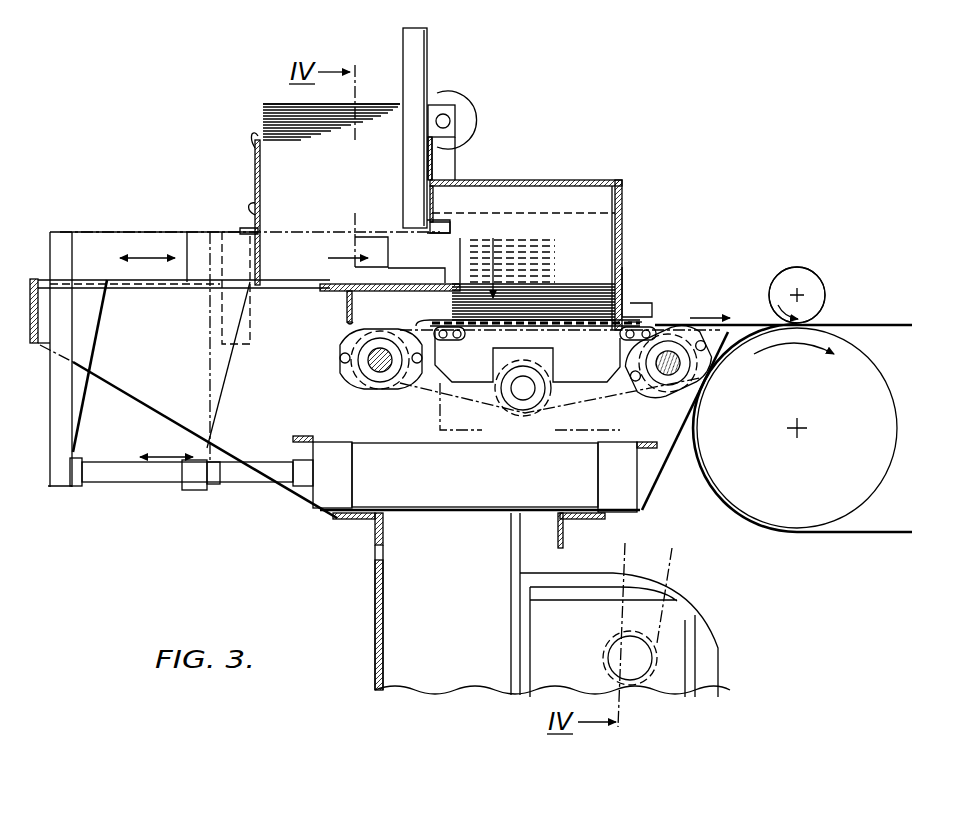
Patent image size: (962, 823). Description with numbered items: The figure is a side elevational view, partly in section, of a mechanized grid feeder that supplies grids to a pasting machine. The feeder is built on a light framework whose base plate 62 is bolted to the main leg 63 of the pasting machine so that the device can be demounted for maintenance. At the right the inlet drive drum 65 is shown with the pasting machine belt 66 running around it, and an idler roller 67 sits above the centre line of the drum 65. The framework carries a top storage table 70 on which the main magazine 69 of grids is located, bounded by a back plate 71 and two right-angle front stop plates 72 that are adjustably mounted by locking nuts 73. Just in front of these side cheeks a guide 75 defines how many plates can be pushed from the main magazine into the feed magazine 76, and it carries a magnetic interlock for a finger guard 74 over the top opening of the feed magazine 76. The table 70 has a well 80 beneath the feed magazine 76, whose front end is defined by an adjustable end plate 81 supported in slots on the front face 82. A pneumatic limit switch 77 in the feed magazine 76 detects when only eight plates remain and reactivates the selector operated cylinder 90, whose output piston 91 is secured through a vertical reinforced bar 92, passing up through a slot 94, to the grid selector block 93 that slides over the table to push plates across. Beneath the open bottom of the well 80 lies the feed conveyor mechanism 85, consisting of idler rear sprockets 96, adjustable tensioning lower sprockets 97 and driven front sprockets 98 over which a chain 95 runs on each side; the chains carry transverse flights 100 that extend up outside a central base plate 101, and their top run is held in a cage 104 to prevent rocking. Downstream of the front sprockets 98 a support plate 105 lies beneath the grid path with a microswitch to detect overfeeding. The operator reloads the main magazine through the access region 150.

The access region 150 is at (247, 108).
The main magazine 69 is at (284, 103).
The front stop plates 72 is at (417, 76).
The locking nuts 73 is at (470, 120).
The guide 75 is at (430, 196).
The finger guard 74 is at (521, 182).
The feed magazine 76 is at (622, 228).
The front face 82 is at (620, 250).
The pneumatic limit switch 77 is at (623, 296).
The adjustable end plate 81 is at (640, 304).
The back plate 71 is at (255, 180).
The grid selector block 93 is at (100, 230).
The slot 94 is at (168, 291).
The vertical reinforced bar 92 is at (84, 396).
The output piston 91 is at (272, 466).
The selector operated cylinder 90 is at (465, 510).
The base plate 62 is at (373, 532).
The main leg 63 is at (375, 596).
The lower sprockets 97 is at (525, 410).
The cage 104 is at (473, 385).
The feed conveyor mechanism 85 is at (435, 380).
The rear sprockets 96 is at (378, 364).
The front sprockets 98 is at (667, 370).
The well 80 is at (443, 300).
The chain 95 is at (452, 340).
The central base plate 101 is at (586, 338).
The transverse flights 100 is at (446, 320).
The top storage table 70 is at (386, 292).
The support plate 105 is at (745, 322).
The idler roller 67 is at (797, 267).
The inlet drive drum 65 is at (892, 478).
The pasting machine belt 66 is at (860, 530).